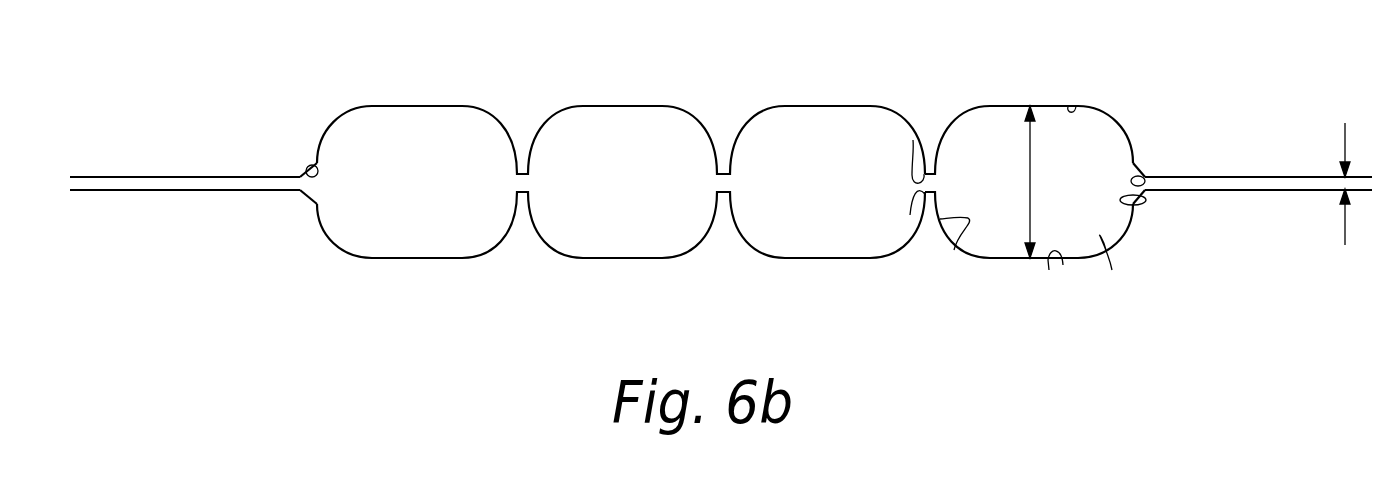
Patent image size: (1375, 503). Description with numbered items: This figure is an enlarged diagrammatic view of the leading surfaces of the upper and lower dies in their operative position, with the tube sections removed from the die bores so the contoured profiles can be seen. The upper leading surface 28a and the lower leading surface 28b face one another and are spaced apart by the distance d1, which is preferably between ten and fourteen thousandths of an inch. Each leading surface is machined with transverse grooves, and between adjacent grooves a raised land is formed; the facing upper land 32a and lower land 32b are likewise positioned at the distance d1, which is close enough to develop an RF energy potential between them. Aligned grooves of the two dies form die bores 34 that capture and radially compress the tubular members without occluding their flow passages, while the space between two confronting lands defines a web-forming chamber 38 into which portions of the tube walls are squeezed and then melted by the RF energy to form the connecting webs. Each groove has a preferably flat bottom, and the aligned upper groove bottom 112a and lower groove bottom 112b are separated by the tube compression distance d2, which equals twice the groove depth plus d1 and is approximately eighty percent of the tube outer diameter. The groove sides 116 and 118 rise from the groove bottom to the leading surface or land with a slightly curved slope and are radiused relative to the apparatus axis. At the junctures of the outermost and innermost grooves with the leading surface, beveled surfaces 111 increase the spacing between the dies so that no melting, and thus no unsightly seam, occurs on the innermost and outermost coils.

The beveled surfaces 111 is at (312, 176).
The die bores 34 is at (587, 140).
The web-forming chamber 38 is at (725, 183).
The upper land 32a is at (924, 174).
The lower land 32b is at (910, 215).
The upper groove bottom 112a is at (1076, 105).
The lower groove bottom 112b is at (1063, 265).
The outer groove side 116 is at (1106, 250).
The inner groove side 118 is at (954, 250).
The upper leading surface 28a is at (1250, 174).
The lower leading surface 28b is at (1283, 194).
The distance between leading surfaces d1 is at (1345, 167).
The tube compression distance d2 is at (1026, 182).